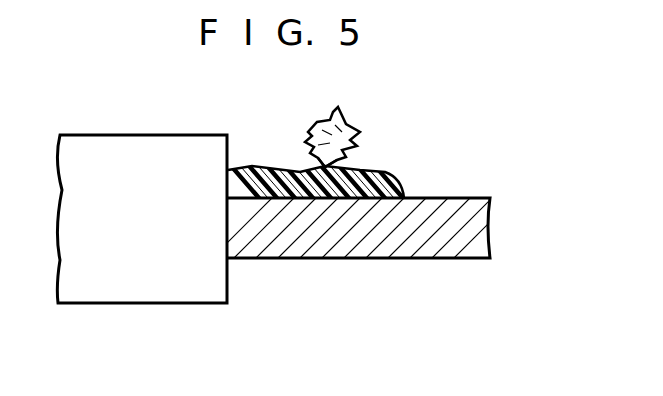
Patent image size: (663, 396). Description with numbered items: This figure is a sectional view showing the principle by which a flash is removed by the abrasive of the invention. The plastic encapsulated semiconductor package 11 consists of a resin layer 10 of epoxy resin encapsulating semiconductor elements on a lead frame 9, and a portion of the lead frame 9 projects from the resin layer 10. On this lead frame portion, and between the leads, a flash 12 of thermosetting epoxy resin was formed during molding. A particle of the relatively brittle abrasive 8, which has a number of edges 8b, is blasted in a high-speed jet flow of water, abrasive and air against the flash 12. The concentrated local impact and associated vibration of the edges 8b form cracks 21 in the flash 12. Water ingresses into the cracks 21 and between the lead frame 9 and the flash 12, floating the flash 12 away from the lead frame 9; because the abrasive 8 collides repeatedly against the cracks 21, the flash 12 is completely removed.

The abrasive 8 is at (347, 114).
The edges 8b is at (316, 165).
The lead frame 9 is at (483, 240).
The resin layer 10 is at (142, 293).
The plastic encapsulated semiconductor package 11 is at (478, 191).
The flashes 12 is at (398, 193).
The cracks 21 is at (282, 168).